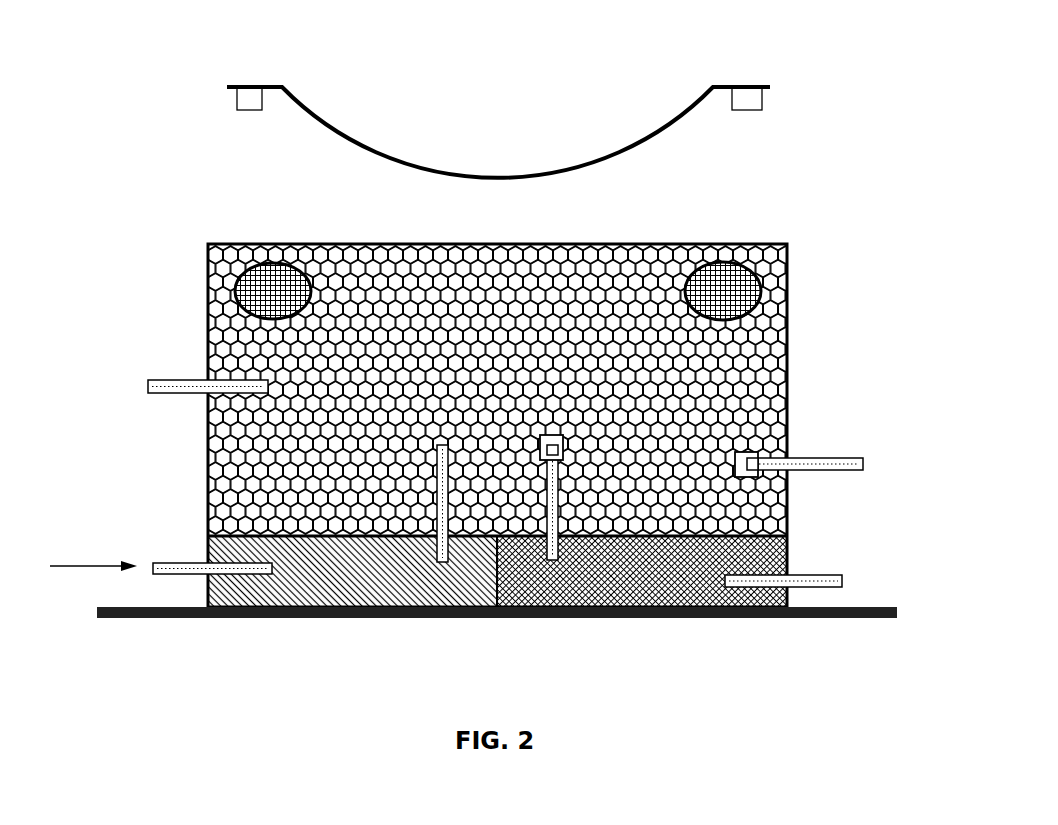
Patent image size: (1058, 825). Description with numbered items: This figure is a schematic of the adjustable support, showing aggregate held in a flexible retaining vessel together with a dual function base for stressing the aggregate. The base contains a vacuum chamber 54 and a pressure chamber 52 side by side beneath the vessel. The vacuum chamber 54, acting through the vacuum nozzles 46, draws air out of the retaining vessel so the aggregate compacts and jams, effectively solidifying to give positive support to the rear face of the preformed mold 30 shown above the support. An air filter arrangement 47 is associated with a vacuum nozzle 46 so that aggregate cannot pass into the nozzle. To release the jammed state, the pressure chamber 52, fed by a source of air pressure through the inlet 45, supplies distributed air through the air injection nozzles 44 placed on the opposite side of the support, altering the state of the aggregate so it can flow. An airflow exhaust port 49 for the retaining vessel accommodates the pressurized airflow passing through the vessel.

The preformed mold 30 is at (727, 85).
The air injection nozzles 44 is at (168, 395).
The inlet 45 is at (177, 560).
The vacuum nozzles 46 is at (560, 500).
The air filter arrangement 47 is at (555, 443).
The airflow exhaust port 49 is at (258, 290).
The pressure chamber 52 is at (383, 582).
The vacuum chamber 54 is at (612, 585).